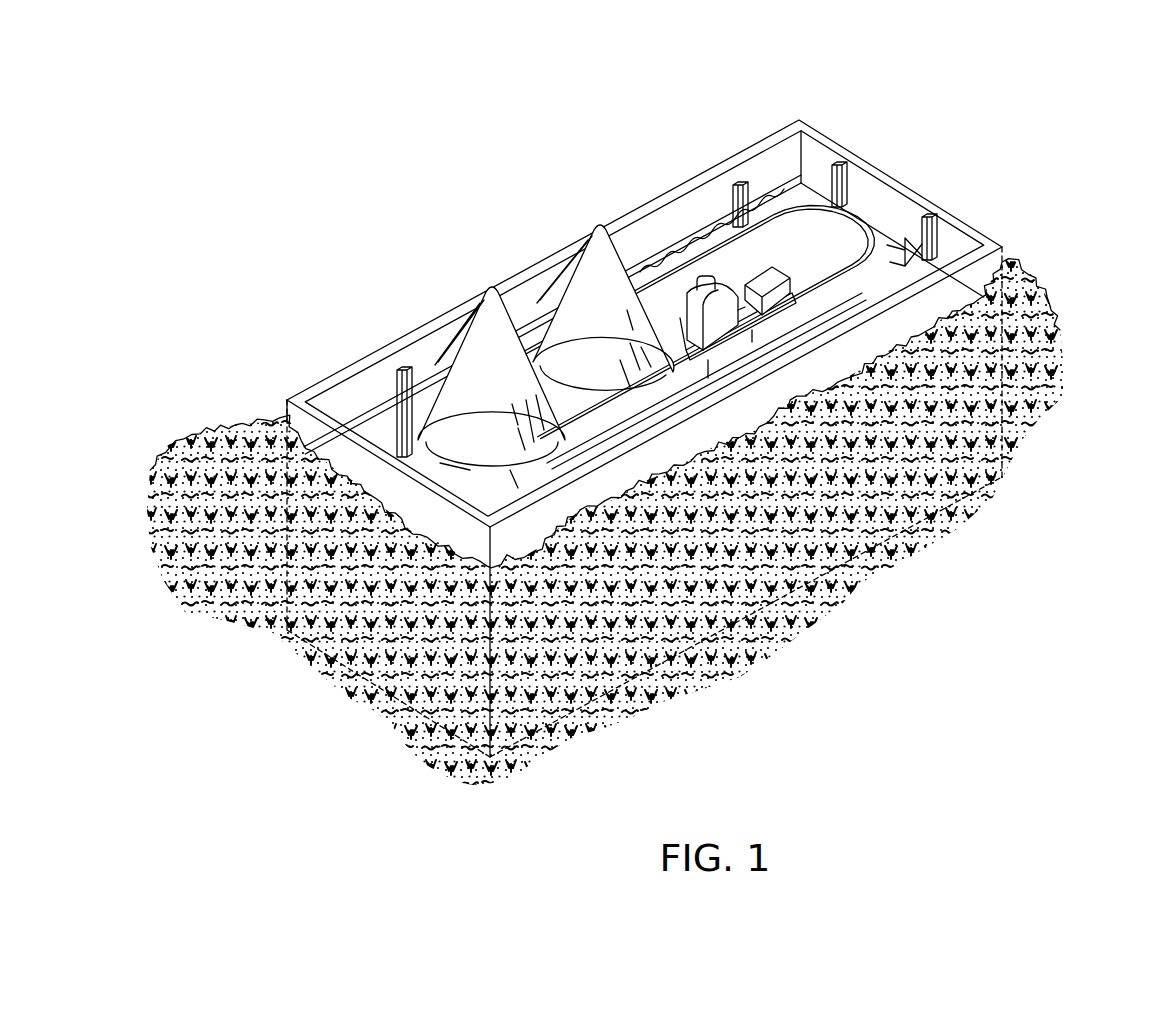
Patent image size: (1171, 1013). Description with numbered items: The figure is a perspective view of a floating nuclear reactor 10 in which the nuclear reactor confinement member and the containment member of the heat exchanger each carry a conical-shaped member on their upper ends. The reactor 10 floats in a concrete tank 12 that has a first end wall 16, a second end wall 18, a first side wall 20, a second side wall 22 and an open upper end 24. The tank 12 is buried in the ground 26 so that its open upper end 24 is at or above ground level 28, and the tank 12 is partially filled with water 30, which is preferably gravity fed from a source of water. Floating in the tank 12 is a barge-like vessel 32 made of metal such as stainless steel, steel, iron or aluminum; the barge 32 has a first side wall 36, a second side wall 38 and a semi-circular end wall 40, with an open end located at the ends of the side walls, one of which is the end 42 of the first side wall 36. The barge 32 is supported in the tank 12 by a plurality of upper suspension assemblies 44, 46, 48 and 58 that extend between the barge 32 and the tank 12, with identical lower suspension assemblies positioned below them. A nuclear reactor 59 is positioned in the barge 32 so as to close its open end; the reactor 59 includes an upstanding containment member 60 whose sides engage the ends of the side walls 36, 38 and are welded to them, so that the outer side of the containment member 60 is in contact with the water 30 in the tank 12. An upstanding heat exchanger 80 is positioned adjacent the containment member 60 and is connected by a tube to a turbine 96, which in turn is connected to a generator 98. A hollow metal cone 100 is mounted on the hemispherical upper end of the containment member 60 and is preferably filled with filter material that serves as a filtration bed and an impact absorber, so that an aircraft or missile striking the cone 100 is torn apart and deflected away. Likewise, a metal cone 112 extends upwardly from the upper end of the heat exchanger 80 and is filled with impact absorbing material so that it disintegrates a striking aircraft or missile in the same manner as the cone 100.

The floating nuclear reactor 10 is at (905, 158).
The concrete tank 12 is at (1020, 240).
The first end wall 16 is at (960, 222).
The second end wall 18 is at (425, 510).
The first side wall 20 is at (713, 418).
The second side wall 22 is at (647, 200).
The open upper end 24 is at (812, 135).
The ground 26 is at (440, 548).
The ground level 28 is at (287, 402).
The water 30 is at (372, 400).
The barge-like vessel 32 is at (853, 285).
The first side wall 36 is at (880, 350).
The second side wall 38 is at (760, 243).
The semi-circular end wall 40 is at (866, 230).
The end of side wall 42 is at (518, 490).
The upper suspension assembly 44 is at (728, 163).
The upper suspension assembly 46 is at (838, 163).
The upper suspension assembly 48 is at (938, 220).
The upper suspension assembly 58 is at (401, 365).
The nuclear reactor 59 is at (503, 487).
The containment member 60 is at (472, 487).
The heat exchanger 80 is at (595, 423).
The turbine 96 is at (838, 326).
The generator 98 is at (795, 302).
The hollow metal cone 100 is at (486, 293).
The metal cone 112 is at (592, 228).